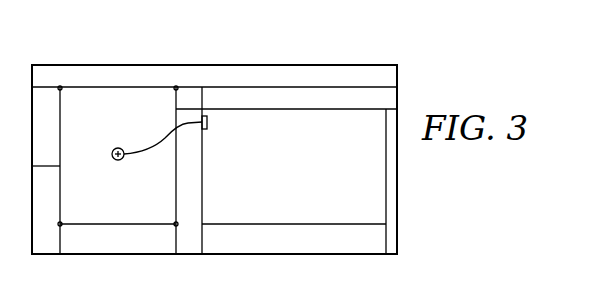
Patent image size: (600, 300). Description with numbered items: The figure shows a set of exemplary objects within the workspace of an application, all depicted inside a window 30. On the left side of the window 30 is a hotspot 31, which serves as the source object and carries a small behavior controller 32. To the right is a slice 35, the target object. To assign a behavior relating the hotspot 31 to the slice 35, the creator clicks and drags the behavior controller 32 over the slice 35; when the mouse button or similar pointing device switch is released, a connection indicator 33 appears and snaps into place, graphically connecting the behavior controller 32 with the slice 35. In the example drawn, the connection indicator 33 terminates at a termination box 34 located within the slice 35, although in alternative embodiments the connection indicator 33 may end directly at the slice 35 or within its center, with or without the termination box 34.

The window 30 is at (214, 65).
The hotspot 31 is at (118, 95).
The behavior controller 32 is at (113, 148).
The connection indicator 33 is at (143, 155).
The termination box 34 is at (207, 122).
The slice 35 is at (380, 172).